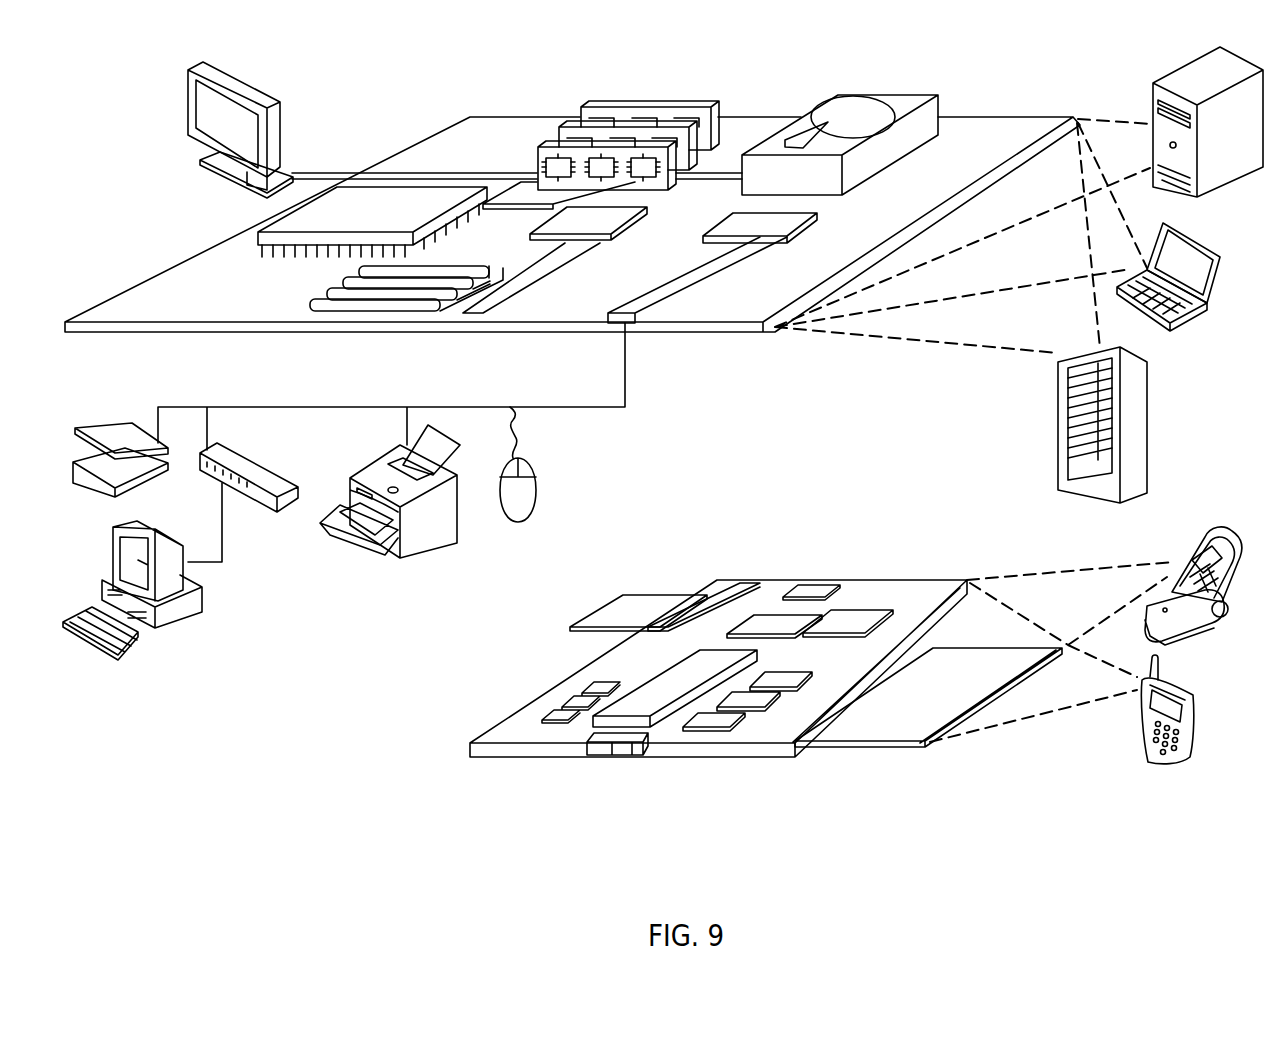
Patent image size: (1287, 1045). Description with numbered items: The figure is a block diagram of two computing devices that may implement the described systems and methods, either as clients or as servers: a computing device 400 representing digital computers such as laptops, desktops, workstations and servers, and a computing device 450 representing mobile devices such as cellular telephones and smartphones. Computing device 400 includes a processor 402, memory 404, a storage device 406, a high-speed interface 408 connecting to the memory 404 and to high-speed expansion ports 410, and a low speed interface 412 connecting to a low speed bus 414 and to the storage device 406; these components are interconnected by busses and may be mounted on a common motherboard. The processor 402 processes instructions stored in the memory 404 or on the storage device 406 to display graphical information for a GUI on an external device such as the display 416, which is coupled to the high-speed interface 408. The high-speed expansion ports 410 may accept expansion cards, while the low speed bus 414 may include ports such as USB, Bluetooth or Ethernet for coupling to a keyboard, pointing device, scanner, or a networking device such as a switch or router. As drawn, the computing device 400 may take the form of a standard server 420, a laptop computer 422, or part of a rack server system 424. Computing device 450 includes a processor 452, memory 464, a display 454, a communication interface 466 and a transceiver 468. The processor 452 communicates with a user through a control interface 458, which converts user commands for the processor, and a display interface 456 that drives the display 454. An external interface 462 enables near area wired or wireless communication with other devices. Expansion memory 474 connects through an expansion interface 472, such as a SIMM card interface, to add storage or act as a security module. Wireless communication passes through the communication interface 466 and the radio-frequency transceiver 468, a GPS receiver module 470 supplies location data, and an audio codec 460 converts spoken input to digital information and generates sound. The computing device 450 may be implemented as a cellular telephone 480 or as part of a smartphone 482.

The computing device 400 is at (390, 91).
The processor 402 is at (260, 237).
The memory 404 is at (590, 107).
The storage device 406 is at (834, 93).
The high-speed interface 408 is at (563, 217).
The high-speed expansion ports 410 is at (322, 300).
The low speed interface 412 is at (727, 217).
The low speed bus 414 is at (637, 323).
The display 416 is at (188, 65).
The standard server 420 is at (1153, 102).
The laptop computer 422 is at (1218, 252).
The rack server system 424 is at (1058, 450).
The computing device 450 is at (449, 753).
The processor 452 is at (650, 715).
The display 454 is at (890, 730).
The display interface 456 is at (720, 724).
The control interface 458 is at (757, 696).
The audio codec 460 is at (770, 678).
The external interface 462 is at (613, 755).
The memory 464 is at (560, 706).
The communication interface 466 is at (770, 618).
The transceiver 468 is at (847, 616).
The GPS receiver module 470 is at (822, 584).
The expansion interface 472 is at (700, 595).
The expansion memory 474 is at (612, 594).
The cellular telephone 480 is at (1205, 540).
The smartphone 482 is at (1140, 715).